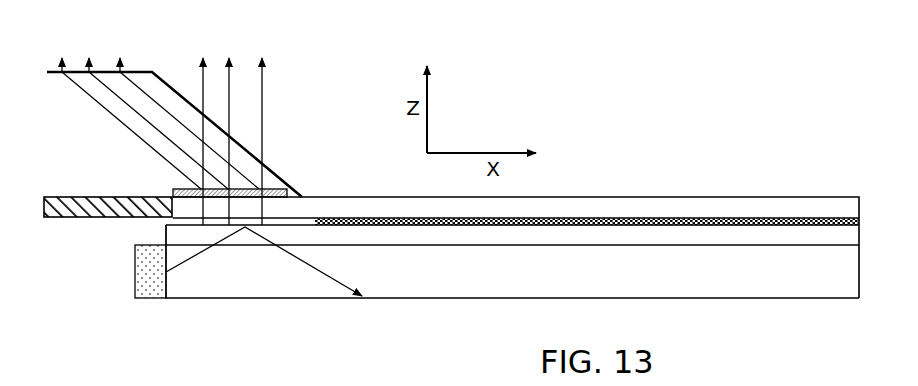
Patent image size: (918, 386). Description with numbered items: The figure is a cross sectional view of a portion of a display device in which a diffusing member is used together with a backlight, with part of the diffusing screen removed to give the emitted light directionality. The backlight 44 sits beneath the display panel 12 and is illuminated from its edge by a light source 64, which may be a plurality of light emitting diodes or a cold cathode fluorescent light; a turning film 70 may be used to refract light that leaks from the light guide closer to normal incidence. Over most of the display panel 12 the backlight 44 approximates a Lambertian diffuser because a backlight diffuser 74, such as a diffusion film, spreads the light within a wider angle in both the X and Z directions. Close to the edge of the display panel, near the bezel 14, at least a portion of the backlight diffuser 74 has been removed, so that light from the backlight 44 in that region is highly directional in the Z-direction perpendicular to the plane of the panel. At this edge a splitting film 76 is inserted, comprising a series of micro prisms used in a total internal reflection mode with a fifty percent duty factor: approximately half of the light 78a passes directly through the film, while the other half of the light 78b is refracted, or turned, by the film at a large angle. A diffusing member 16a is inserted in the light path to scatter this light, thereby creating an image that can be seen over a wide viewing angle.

The display panel 12 is at (587, 197).
The bezel 14 is at (72, 220).
The diffusing member 16a is at (163, 80).
The backlight 44 is at (458, 298).
The light source 64 is at (152, 298).
The turning film 70 is at (166, 232).
The backlight diffuser 74 is at (797, 218).
The splitting film 76 is at (173, 188).
The light passing directly through the film 78a is at (265, 107).
The light refracted by the film 78b is at (150, 146).